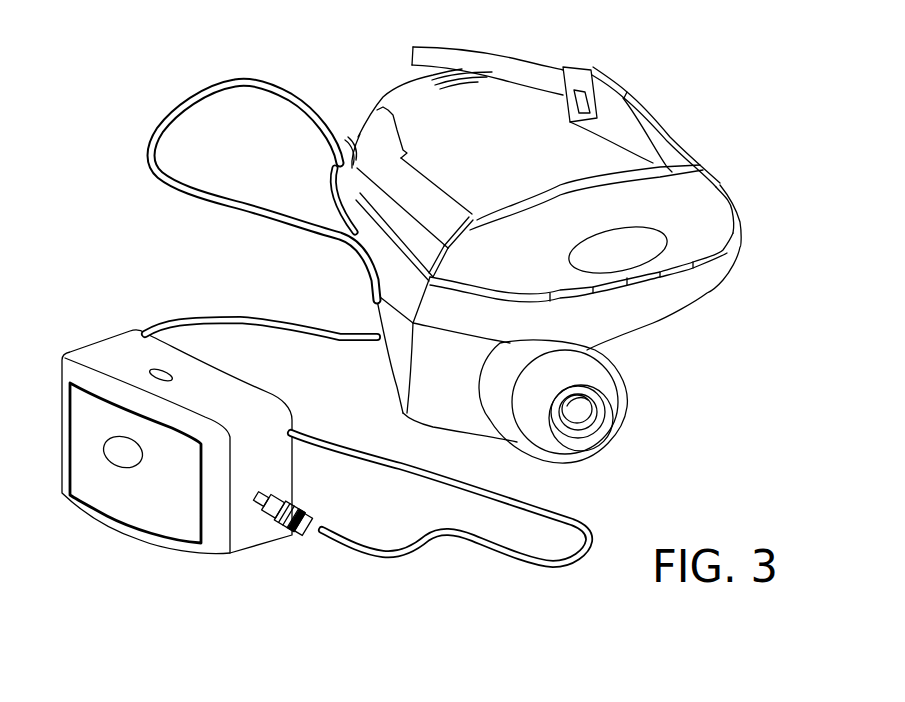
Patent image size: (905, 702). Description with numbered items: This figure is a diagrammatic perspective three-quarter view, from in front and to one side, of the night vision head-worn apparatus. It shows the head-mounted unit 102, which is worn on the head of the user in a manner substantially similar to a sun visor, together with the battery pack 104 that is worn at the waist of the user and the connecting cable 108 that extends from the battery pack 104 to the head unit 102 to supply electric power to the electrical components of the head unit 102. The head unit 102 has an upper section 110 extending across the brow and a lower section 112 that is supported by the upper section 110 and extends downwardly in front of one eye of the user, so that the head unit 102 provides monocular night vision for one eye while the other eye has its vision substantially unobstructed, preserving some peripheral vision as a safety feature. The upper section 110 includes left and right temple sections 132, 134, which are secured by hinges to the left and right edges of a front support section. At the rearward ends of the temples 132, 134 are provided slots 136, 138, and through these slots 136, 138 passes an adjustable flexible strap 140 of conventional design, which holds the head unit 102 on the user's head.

The head-mounted unit 102 is at (721, 168).
The battery pack 104 is at (251, 531).
The connecting cable 108 is at (397, 553).
The upper section 110 is at (697, 272).
The lower section 112 is at (462, 417).
The left temple section 132 is at (648, 128).
The right temple section 134 is at (417, 193).
The slot 136 is at (593, 62).
The slot 138 is at (340, 213).
The adjustable flexible strap 140 is at (497, 50).